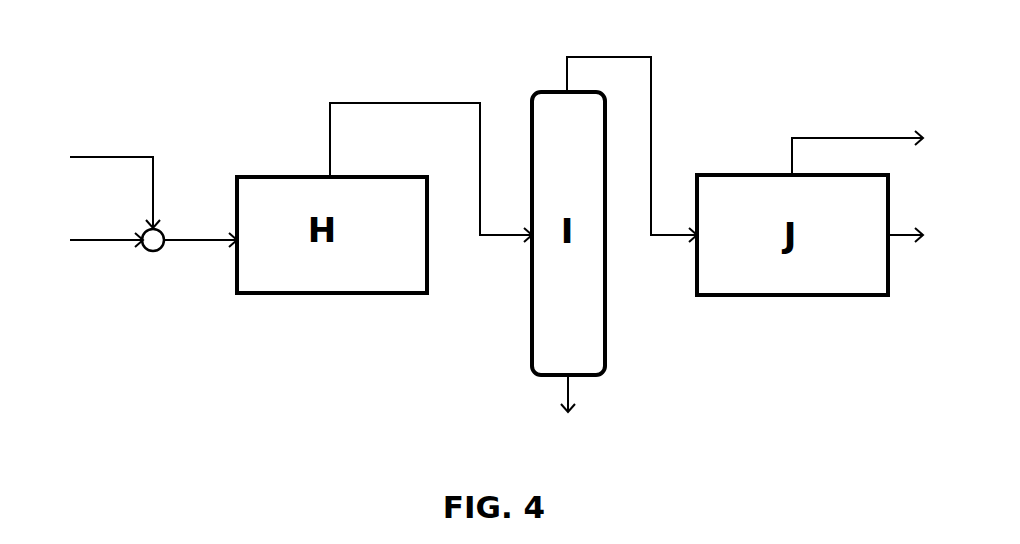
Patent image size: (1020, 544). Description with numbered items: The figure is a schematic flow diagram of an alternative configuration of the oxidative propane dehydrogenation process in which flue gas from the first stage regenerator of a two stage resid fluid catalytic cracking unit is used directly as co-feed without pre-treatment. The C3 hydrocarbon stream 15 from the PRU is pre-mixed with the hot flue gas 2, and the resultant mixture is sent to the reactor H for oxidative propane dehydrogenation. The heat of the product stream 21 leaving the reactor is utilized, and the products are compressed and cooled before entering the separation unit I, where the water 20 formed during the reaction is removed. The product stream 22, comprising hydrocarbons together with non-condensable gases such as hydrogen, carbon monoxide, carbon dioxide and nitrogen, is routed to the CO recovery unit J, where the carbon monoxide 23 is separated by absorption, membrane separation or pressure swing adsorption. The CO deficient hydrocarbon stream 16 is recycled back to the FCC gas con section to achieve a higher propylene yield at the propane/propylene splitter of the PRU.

The hot flue gas 2 is at (94, 240).
The C3 hydrocarbon stream 15 is at (98, 186).
The product stream 21 is at (431, 161).
The product stream 22 is at (632, 133).
The water 20 is at (570, 410).
The CO deficient hydrocarbon stream 16 is at (877, 152).
The carbon monoxide 23 is at (925, 235).